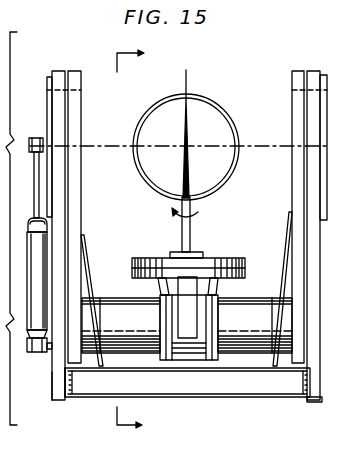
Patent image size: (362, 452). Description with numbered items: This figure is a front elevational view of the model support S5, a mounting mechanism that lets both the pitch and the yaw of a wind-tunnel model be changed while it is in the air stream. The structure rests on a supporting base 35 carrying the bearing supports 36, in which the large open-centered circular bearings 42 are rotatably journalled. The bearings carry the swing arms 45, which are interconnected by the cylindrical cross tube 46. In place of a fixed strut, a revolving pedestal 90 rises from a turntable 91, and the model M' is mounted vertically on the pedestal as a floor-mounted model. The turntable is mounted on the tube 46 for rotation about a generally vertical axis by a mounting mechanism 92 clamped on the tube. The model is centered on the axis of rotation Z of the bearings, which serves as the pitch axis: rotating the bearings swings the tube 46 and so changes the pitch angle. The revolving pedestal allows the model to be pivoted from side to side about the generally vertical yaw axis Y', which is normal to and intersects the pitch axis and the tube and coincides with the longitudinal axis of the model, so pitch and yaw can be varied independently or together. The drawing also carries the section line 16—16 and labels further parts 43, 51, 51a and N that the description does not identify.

The section line 16- 16 is at (141, 242).
The supporting base 35 is at (214, 399).
The bearing supports 36 is at (52, 377).
The large open centered circular bearings 42 is at (62, 72).
The guide plate 43 is at (49, 82).
The swing arms 45 is at (79, 233).
The cylindrical tube 46 is at (145, 349).
The hydraulic cylinder 51 is at (31, 290).
The cylinder rod nut 51a is at (37, 181).
The revolving pedestal 90 is at (180, 241).
The turntable 91 is at (228, 272).
The mounting mechanism 92 is at (231, 278).
The model support S5 is at (251, 402).
The dial N is at (216, 105).
The model M' is at (202, 149).
The yaw axis Y'— Y' is at (191, 152).
The pitch axis Z— Z is at (179, 146).